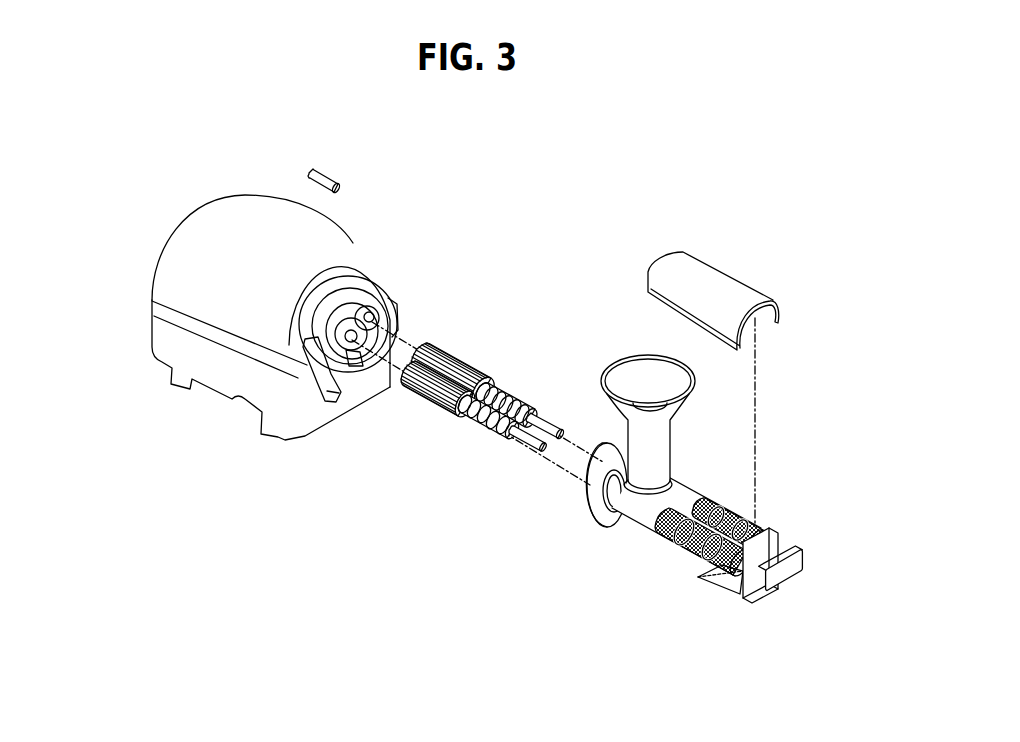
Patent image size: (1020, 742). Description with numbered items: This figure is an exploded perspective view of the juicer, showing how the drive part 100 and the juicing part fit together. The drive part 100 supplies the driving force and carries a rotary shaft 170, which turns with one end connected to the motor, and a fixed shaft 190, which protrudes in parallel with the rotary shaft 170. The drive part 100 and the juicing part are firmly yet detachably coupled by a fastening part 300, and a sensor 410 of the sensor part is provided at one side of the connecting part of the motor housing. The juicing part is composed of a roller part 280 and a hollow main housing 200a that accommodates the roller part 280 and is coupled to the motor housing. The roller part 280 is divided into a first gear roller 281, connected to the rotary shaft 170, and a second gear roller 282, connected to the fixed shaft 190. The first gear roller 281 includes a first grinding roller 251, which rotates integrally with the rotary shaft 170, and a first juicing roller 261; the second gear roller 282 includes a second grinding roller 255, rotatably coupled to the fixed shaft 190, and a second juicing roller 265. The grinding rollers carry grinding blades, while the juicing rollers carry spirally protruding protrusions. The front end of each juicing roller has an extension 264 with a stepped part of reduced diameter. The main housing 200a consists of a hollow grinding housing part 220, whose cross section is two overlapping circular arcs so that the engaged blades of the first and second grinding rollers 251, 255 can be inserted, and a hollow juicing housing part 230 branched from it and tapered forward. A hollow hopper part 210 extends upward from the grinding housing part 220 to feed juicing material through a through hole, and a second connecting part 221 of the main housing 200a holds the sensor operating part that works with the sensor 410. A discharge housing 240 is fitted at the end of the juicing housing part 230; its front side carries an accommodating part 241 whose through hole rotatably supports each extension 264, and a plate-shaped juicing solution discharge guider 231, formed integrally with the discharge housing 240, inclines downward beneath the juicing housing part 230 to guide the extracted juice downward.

The drive part 100 is at (296, 303).
The rotary shaft 170 is at (390, 323).
The fixed shaft 190 is at (333, 405).
The fastening part 300 is at (382, 282).
The sensor 410 is at (356, 368).
The roller part 280 is at (455, 324).
The first gear roller 281 is at (476, 345).
The second gear roller 282 is at (412, 392).
The first grinding roller 251 is at (452, 278).
The second grinding roller 255 is at (463, 446).
The first juicing roller 261 is at (530, 395).
The second juicing roller 265 is at (473, 422).
The extension 264 is at (559, 420).
The main housing 200a is at (694, 476).
The hopper part 210 is at (632, 357).
The grinding housing part 220 is at (650, 528).
The second connecting part 221 is at (601, 527).
The juicing housing part 230 is at (698, 558).
The juicing solution discharge guider 231 is at (726, 587).
The discharge housing 240 is at (781, 558).
The accommodating part 241 is at (788, 578).